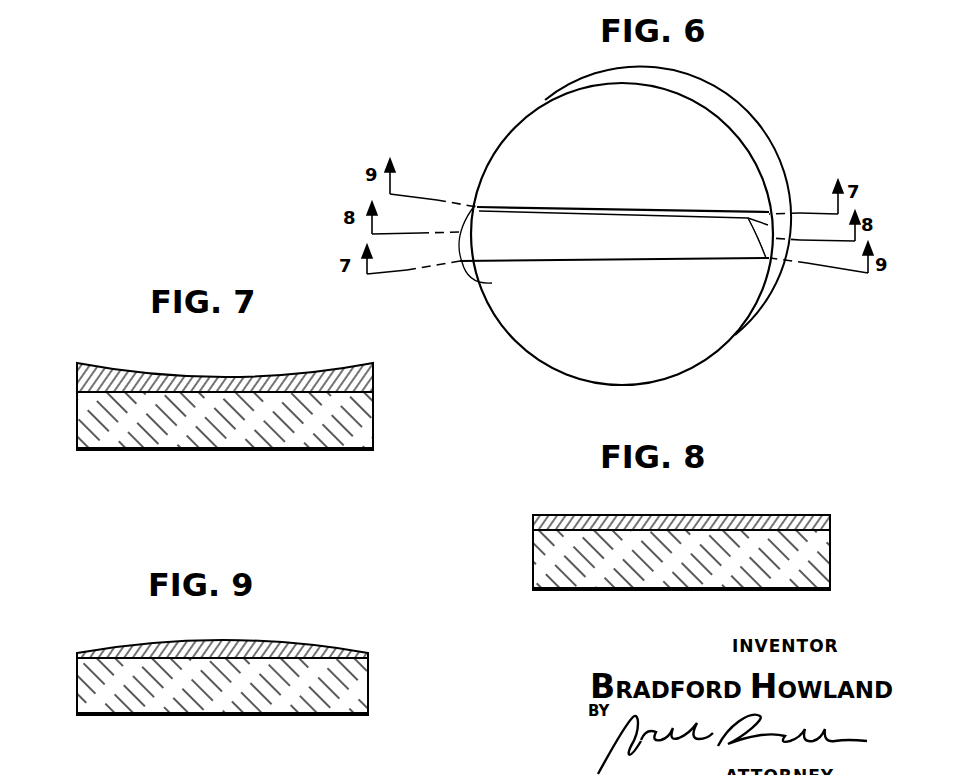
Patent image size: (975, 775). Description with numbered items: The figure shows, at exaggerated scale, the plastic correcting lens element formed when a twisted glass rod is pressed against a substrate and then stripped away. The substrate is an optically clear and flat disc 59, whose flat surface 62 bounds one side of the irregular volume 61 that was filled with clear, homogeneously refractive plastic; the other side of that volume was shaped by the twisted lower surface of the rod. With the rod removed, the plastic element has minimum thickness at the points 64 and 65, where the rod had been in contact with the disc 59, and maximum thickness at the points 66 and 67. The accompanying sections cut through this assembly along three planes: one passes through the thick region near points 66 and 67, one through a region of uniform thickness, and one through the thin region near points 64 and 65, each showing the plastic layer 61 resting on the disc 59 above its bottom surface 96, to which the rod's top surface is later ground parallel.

In FIG. 6, the flat disc 59 is at (754, 127).
In FIG. 7, the flat disc 59 is at (373, 420).
In FIG. 8, the flat disc 59 is at (830, 563).
In FIG. 9, the flat disc 59 is at (368, 688).
In FIG. 6, the irregular volume 61 is at (634, 238).
In FIG. 7, the irregular volume 61 is at (237, 380).
In FIG. 8, the irregular volume 61 is at (690, 516).
In FIG. 9, the irregular volume 61 is at (230, 640).
In FIG. 6, the flat surface of disc 62 is at (527, 140).
In FIG. 6, the point of minimum thickness 64 is at (764, 258).
In FIG. 9, the point of minimum thickness 64 is at (368, 652).
In FIG. 6, the point of minimum thickness 65 is at (477, 207).
In FIG. 9, the point of minimum thickness 65 is at (77, 655).
In FIG. 6, the point of maximum thickness 66 is at (766, 213).
In FIG. 7, the point of maximum thickness 66 is at (373, 364).
In FIG. 6, the point of maximum thickness 67 is at (480, 270).
In FIG. 7, the point of maximum thickness 67 is at (77, 364).
In FIG. 7, the bottom surface of blank 96 is at (214, 452).
In FIG. 8, the bottom surface of blank 96 is at (553, 592).
In FIG. 9, the bottom surface of blank 96 is at (240, 716).